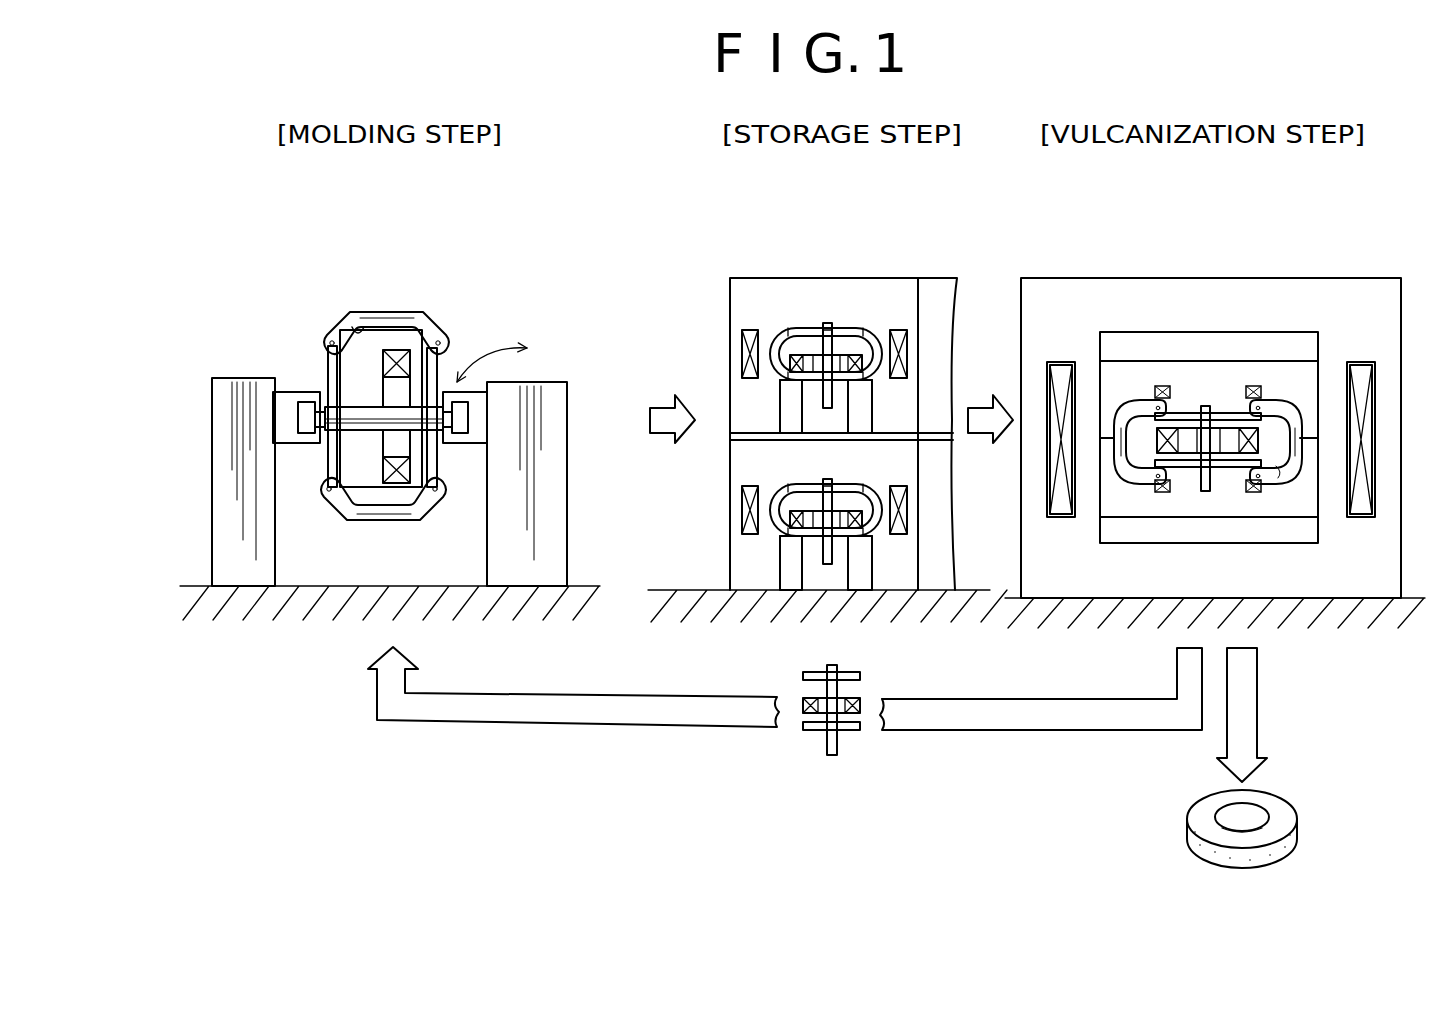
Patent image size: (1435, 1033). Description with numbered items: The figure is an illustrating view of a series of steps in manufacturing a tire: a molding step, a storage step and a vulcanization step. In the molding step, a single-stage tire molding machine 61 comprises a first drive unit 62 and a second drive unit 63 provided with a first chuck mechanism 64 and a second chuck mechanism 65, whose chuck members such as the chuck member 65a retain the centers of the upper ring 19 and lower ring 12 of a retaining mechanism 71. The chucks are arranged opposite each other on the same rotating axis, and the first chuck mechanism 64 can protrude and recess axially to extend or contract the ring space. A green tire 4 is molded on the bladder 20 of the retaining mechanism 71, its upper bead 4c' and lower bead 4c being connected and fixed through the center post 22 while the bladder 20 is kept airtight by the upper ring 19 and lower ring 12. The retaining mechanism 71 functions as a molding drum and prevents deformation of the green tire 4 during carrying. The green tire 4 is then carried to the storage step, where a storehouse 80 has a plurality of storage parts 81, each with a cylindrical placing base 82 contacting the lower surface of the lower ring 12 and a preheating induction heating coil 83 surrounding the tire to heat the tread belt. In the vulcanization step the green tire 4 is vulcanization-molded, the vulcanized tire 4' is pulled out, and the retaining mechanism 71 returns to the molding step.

The green tire 4 is at (841, 389).
The lower bead 4c is at (871, 435).
The upper bead 4c' is at (778, 362).
The vulcanized tire 4' is at (1263, 818).
The lower ring 12 is at (415, 478).
The upper ring 19 is at (322, 467).
The bladder 20 is at (357, 328).
The center post 22 is at (358, 430).
The tire molding machine 61 is at (498, 318).
The first drive unit 62 is at (215, 395).
The second drive unit 63 is at (560, 382).
The first chuck mechanism 64 is at (292, 433).
The second chuck mechanism 65 is at (480, 433).
The chuck member 65a is at (456, 445).
The retaining mechanism 71 is at (323, 363).
The storehouse 80 is at (773, 270).
The storage part 81 is at (937, 294).
The placing base 82 is at (778, 406).
The preheating induction heating coil 83 is at (906, 345).